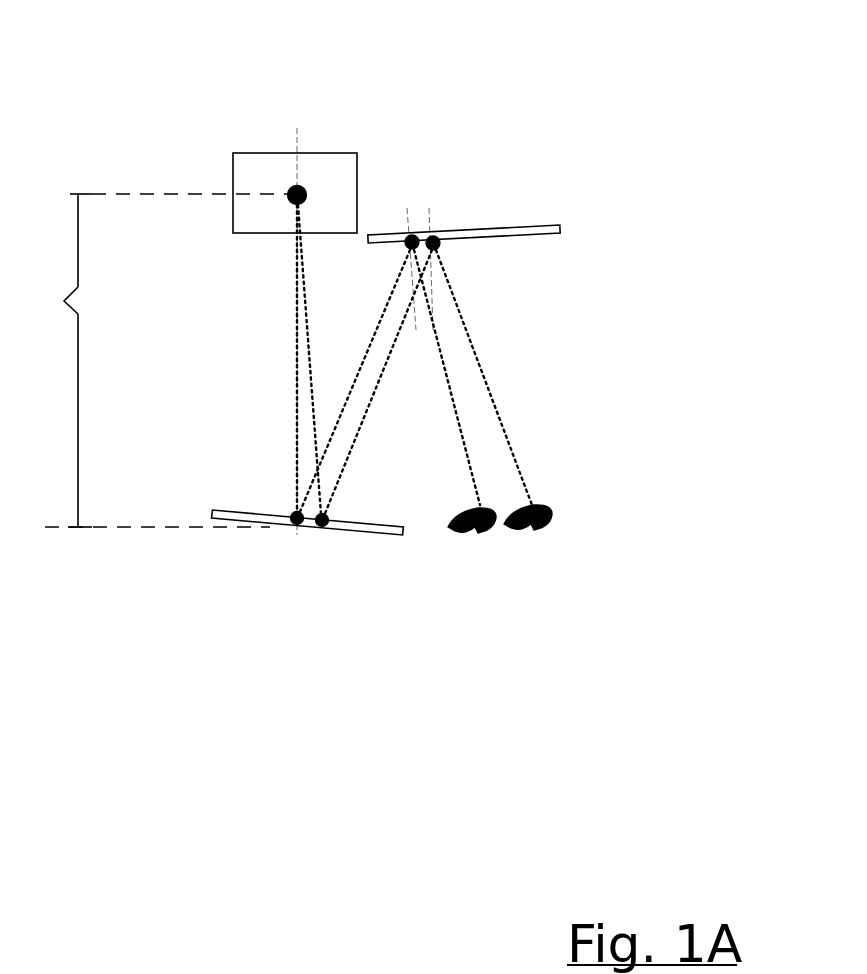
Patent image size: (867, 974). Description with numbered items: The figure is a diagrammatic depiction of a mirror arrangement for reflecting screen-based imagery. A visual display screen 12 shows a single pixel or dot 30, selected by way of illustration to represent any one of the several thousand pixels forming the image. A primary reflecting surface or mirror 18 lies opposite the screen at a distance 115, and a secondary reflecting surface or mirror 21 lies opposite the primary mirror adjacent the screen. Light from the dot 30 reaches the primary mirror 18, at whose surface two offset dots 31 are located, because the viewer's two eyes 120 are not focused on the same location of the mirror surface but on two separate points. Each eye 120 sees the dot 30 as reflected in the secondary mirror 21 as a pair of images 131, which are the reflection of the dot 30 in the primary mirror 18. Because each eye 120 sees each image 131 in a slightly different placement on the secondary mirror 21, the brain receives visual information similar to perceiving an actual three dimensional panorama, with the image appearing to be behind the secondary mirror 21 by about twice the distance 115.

The visual display screen 12 is at (281, 150).
The dot 30 is at (288, 186).
The secondary reflecting surface or mirror 21 is at (514, 239).
The pair of images 131 is at (413, 233).
The primary reflecting surface or mirror 18 is at (236, 512).
The dots 31 is at (317, 531).
The eyes 120 is at (488, 496).
The distance 115 is at (154, 360).